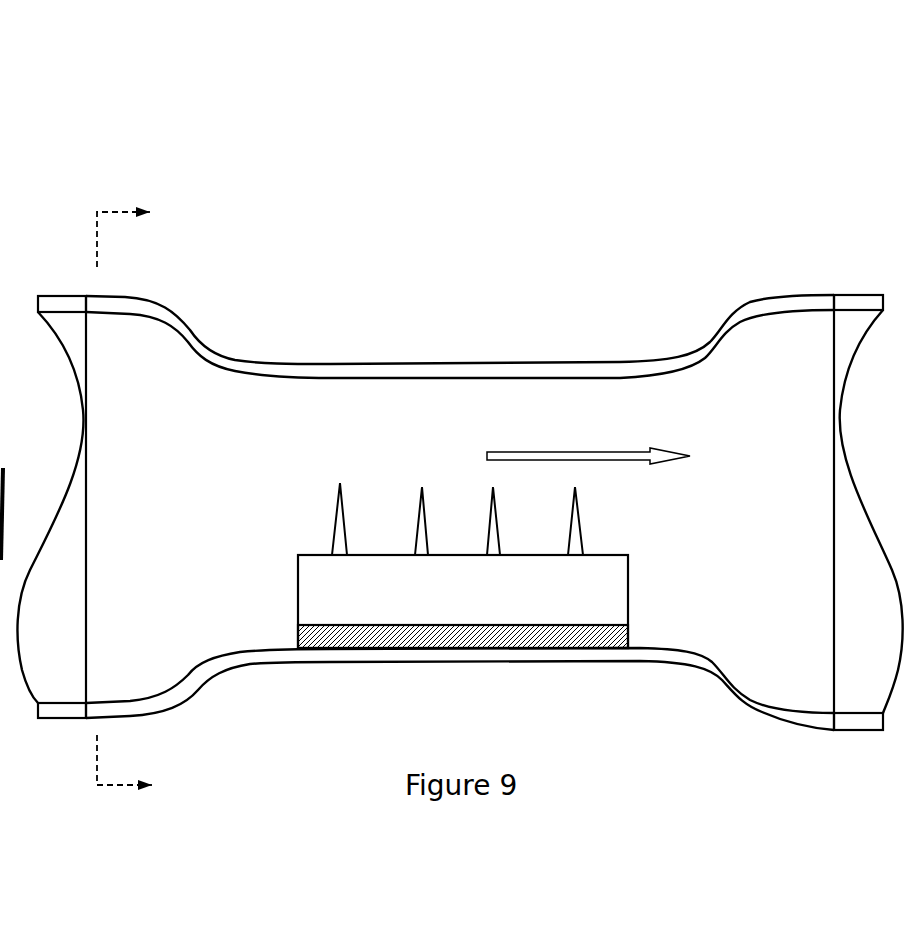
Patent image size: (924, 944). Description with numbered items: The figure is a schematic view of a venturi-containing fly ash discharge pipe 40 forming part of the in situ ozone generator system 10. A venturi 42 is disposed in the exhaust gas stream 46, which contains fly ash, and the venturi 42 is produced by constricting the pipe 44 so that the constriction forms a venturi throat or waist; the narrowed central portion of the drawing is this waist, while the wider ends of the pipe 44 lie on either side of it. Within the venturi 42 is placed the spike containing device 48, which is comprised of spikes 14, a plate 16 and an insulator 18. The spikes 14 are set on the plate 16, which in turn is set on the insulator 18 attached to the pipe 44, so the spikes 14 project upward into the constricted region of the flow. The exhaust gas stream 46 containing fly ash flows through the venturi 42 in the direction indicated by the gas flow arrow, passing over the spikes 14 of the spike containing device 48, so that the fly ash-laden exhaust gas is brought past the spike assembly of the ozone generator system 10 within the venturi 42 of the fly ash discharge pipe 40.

The in situ ozone generator system 10 is at (145, 499).
The spikes 14 is at (333, 507).
The plate 16 is at (535, 578).
The insulator 18 is at (452, 636).
The fly ash discharge pipe 40 is at (415, 298).
The venturi 42 is at (578, 366).
The pipe 44 is at (62, 296).
The exhaust gas stream 46 is at (333, 445).
The spike containing device 48 is at (665, 532).